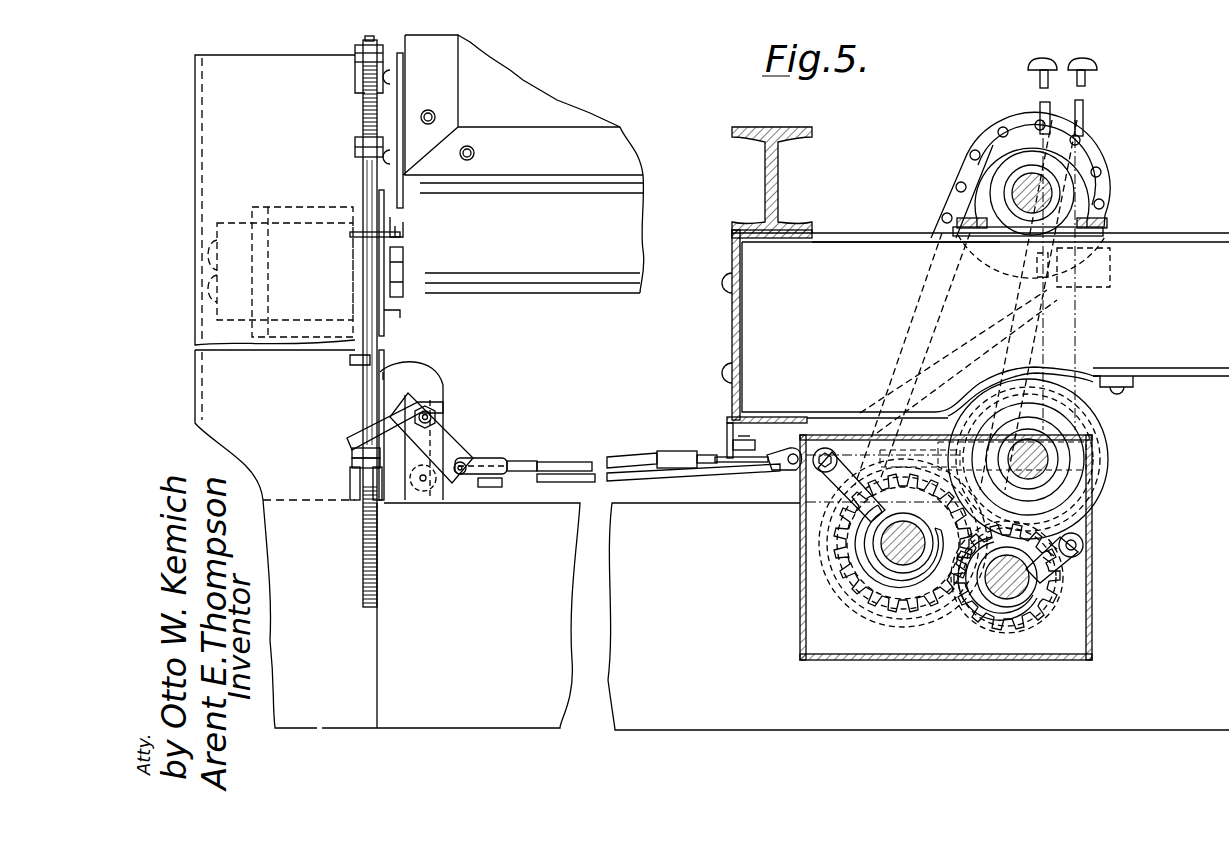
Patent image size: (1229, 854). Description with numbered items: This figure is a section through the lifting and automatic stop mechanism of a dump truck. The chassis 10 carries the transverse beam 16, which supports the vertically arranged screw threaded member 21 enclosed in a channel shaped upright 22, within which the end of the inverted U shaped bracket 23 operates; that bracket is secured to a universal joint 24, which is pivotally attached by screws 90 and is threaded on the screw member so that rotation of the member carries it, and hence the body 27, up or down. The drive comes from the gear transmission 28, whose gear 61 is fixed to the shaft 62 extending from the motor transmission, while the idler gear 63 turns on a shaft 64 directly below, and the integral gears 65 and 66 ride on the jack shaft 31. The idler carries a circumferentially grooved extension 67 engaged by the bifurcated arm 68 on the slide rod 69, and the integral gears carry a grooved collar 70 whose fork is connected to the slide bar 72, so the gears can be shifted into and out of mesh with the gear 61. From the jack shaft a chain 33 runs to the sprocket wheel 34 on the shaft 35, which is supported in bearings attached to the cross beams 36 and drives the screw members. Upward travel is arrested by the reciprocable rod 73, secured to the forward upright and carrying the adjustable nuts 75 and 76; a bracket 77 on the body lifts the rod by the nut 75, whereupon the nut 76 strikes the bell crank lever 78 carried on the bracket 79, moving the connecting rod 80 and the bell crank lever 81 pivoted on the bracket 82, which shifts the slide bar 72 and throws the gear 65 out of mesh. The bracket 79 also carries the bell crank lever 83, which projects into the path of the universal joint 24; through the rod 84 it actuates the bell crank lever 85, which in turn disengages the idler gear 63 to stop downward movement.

The chassis 10 is at (812, 133).
The transverse beam 16 is at (455, 578).
The screw threaded member 21 is at (825, 470).
The channel shaped upright 22 is at (275, 200).
The inverted U shaped bracket 23 is at (283, 207).
The universal joint 24 is at (356, 80).
The body 27 is at (513, 164).
The gear transmission 28 is at (1093, 604).
The jack shaft 31 is at (865, 565).
The chain 33 is at (1105, 217).
The sprocket wheel 34 is at (1089, 200).
The shaft 35 is at (1050, 190).
The cross beam 36 is at (1020, 304).
The gear 61 is at (1090, 512).
The shaft 62 is at (1062, 455).
The idler gear 63 is at (990, 608).
The shaft 64 is at (1035, 600).
The gear 65 is at (953, 605).
The gear 66 is at (920, 568).
The circumferentially grooved extension 67 is at (1005, 600).
The arm 68 is at (1080, 570).
The slide rod 69 is at (1084, 550).
The grooved collar 70 is at (892, 583).
The slide bar 72 is at (820, 470).
The reciprocable rod 73 is at (365, 375).
The nut 75 is at (355, 145).
The nut 76 is at (355, 452).
The bracket 77 is at (397, 236).
The bell crank lever 78 is at (453, 434).
The bracket 79 is at (425, 491).
The connecting rod 80 is at (565, 462).
The bell crank lever 81 is at (780, 468).
The bracket 82 is at (727, 373).
The bell crank lever 83 is at (438, 372).
The rod 84 is at (693, 484).
The bell crank lever 85 is at (1120, 390).
The screw 90 is at (403, 267).